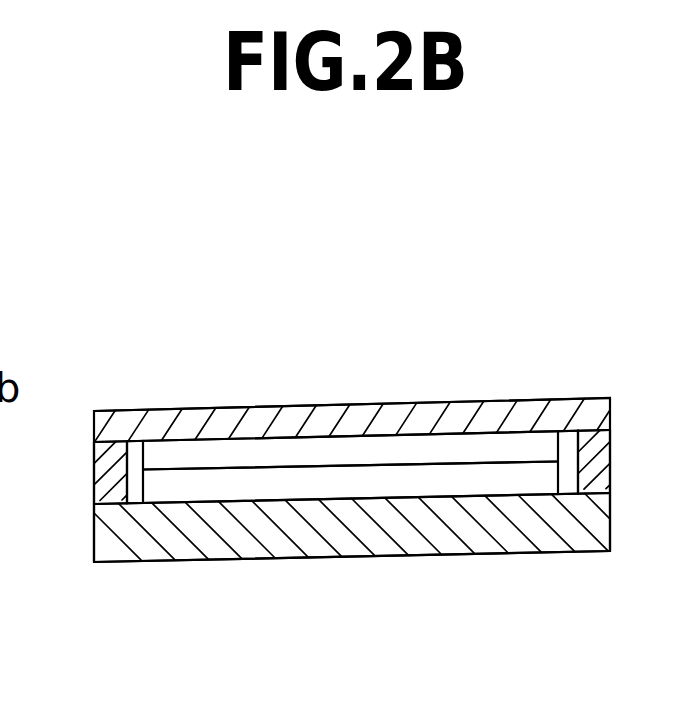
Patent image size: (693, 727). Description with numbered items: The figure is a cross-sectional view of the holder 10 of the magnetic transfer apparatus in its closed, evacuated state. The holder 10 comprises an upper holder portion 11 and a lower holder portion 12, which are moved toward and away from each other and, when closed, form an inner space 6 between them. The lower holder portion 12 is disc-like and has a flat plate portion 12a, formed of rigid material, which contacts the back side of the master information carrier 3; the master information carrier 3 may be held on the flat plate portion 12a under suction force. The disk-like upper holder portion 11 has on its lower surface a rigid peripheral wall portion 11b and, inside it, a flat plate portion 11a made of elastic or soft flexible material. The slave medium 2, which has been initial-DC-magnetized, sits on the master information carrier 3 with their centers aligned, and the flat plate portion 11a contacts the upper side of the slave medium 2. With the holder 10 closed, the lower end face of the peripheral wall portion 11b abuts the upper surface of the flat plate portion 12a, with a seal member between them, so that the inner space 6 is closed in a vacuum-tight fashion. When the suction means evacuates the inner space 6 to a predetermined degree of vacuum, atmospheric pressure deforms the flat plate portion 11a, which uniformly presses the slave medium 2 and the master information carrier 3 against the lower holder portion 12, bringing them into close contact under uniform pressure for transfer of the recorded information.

The holder 10 is at (252, 330).
The upper holder portion 11 is at (509, 394).
The flat plate portion 11a is at (272, 412).
The peripheral wall portion 11b is at (100, 466).
The lower holder portion 12 is at (500, 562).
The flat plate portion 12a is at (292, 520).
The slave medium 2 is at (385, 452).
The master information carrier 3 is at (387, 482).
The inner space 6 is at (134, 460).